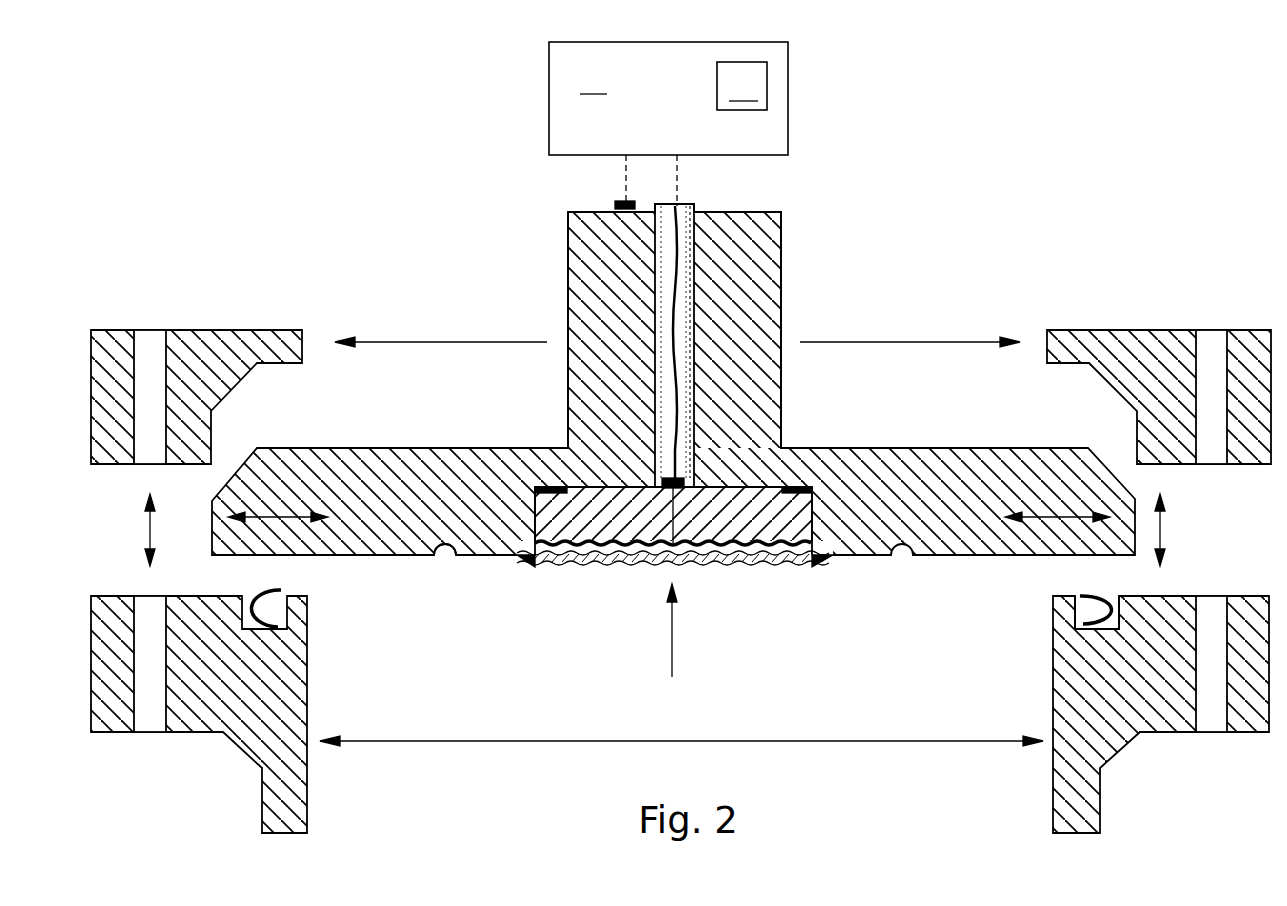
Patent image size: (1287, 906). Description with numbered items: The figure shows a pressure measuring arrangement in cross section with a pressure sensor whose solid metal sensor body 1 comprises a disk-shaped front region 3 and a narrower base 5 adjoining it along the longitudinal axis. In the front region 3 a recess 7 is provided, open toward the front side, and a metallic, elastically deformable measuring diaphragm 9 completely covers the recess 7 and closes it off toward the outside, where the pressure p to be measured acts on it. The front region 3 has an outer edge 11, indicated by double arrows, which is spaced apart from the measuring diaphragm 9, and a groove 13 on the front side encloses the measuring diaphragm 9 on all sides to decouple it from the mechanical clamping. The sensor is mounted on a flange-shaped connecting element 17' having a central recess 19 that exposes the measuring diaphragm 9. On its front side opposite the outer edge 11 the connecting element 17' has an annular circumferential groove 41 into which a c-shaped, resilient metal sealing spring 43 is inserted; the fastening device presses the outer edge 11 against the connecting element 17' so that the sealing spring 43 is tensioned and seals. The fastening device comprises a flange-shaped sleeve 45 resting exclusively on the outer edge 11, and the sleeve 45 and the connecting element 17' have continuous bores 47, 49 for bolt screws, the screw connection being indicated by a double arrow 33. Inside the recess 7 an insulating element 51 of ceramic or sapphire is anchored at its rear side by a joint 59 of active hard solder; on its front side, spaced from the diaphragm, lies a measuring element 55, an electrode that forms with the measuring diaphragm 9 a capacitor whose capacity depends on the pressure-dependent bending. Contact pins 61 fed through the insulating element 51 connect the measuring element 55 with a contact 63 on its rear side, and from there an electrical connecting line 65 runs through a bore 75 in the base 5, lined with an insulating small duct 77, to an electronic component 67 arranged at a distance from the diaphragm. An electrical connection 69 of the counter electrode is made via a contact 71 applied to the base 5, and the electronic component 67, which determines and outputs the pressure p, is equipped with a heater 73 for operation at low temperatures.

The sensor body 1 is at (388, 283).
The front region 3 is at (440, 470).
The base 5 is at (585, 263).
The recess 7 is at (535, 515).
The measuring diaphragm 9 is at (598, 560).
The outer edge 11 is at (283, 515).
The groove 13 is at (444, 552).
The connecting element 17' is at (238, 711).
The central recess 19 is at (681, 729).
The direction arrows 33 is at (893, 342).
The annular circumferential groove 41 is at (1083, 602).
The sealing spring 43 is at (1108, 600).
The sleeve 45 is at (230, 345).
The continuous bore 47 is at (150, 345).
The continuous bore 49 is at (150, 714).
The insulating element 51 is at (630, 548).
The measuring element 55 is at (728, 552).
The joint 59 is at (797, 485).
The contact pin 61 is at (698, 548).
The contact 63 is at (665, 476).
The electrical connecting line 65 is at (668, 332).
The electronic component 67 is at (668, 98).
The electrical connection 69 is at (626, 178).
The contact 71 is at (620, 206).
The heater 73 is at (742, 86).
The bore 75 is at (681, 263).
The small duct 77 is at (692, 298).
The pressure p is at (672, 645).